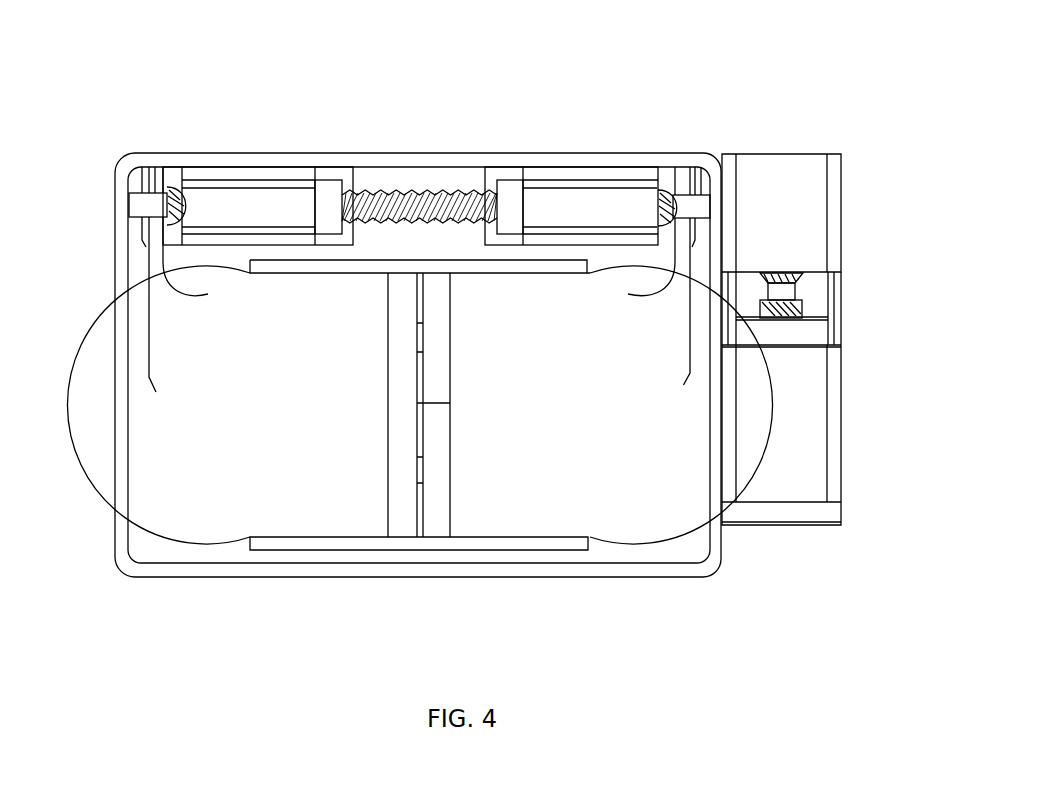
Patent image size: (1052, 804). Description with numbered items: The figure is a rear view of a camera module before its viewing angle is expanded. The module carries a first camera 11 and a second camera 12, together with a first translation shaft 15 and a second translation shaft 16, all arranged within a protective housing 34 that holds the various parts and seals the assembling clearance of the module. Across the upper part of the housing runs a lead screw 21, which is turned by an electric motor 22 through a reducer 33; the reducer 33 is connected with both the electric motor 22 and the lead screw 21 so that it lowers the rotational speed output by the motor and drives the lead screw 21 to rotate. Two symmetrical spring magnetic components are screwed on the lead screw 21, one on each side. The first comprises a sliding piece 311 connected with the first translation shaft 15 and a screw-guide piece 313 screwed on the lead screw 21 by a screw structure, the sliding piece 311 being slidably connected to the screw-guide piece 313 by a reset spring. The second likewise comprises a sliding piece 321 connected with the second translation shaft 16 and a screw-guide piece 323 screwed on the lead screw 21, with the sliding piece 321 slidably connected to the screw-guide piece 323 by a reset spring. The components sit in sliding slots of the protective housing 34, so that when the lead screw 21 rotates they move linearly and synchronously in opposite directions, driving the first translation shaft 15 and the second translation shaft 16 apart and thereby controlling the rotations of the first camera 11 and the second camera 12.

The first camera 11 is at (562, 490).
The second camera 12 is at (268, 490).
The first translation shaft 15 is at (700, 292).
The second translation shaft 16 is at (162, 297).
The lead screw 21 is at (390, 205).
The electric motor 22 is at (777, 417).
The reducer 33 is at (777, 203).
The protective housing 34 is at (437, 181).
The sliding piece 311 is at (675, 177).
The screw-guide piece 313 is at (587, 203).
The sliding piece 321 is at (163, 177).
The screw-guide piece 323 is at (243, 203).